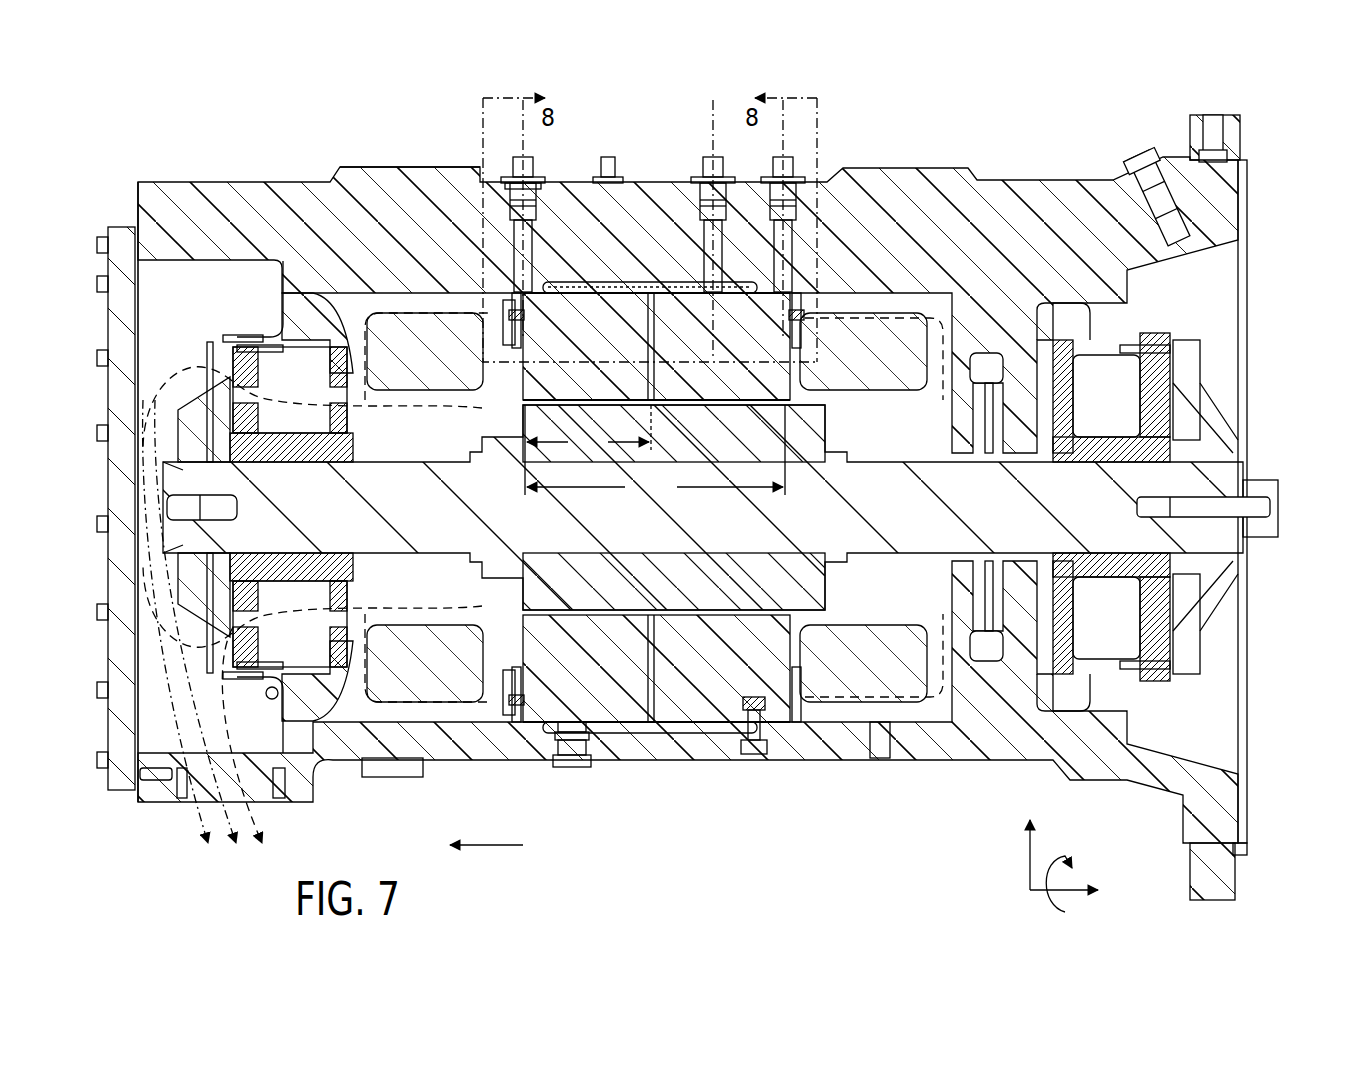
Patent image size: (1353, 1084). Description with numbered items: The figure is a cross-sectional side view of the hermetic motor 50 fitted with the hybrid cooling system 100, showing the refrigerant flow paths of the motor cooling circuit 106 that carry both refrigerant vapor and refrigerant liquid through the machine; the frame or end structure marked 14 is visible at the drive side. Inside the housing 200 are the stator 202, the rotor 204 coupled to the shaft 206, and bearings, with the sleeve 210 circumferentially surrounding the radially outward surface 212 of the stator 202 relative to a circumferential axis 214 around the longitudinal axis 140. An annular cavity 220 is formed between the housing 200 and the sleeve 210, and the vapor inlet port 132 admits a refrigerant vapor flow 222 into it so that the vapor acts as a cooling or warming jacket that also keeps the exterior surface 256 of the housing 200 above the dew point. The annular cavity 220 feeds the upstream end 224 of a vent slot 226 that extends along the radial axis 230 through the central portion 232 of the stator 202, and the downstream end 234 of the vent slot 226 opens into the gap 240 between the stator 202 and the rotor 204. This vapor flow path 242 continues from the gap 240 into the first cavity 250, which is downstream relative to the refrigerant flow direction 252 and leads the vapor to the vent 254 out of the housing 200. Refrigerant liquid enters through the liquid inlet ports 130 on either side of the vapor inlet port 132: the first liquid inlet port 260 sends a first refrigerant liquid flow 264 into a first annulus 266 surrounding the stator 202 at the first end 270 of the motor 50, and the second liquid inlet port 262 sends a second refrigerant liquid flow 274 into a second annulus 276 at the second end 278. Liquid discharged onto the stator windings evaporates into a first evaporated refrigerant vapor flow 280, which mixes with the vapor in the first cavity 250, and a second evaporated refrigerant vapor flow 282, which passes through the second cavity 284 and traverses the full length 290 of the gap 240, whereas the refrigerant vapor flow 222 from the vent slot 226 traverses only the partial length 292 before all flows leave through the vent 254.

The end plate / frame 14 is at (1108, 114).
The motor 50 is at (1016, 148).
The hybrid cooling system 100 is at (906, 116).
The motor cooling circuit 106 is at (462, 113).
The liquid inlet ports 130 is at (608, 170).
The vapor inlet port 132 is at (700, 180).
The longitudinal axis 140 is at (1074, 893).
The housing 200 is at (232, 206).
The stator 202 is at (860, 656).
The rotor 204 is at (805, 572).
The shaft 206 is at (1180, 476).
The sleeve 210 is at (584, 289).
The radially outward surface 212 is at (708, 728).
The circumferential axis 214 is at (1048, 894).
The annular cavity 220 is at (637, 289).
The refrigerant vapor flow 222 is at (712, 115).
The upstream end 224 is at (664, 308).
The vent slot 226 is at (658, 348).
The radial axis 230 is at (1028, 858).
The central portion 232 is at (645, 347).
The downstream end 234 is at (662, 392).
The gap 240 is at (552, 366).
The vapor flow path 242 is at (672, 282).
The first cavity 250 is at (337, 300).
The refrigerant flow direction 252 is at (523, 846).
The vent 254 is at (258, 805).
The exterior surface 256 is at (385, 180).
The first liquid inlet port 260 is at (536, 180).
The second liquid inlet port 262 is at (800, 180).
The first refrigerant liquid flow 264 is at (518, 150).
The first annulus 266 is at (508, 296).
The first end 270 is at (523, 768).
The second refrigerant liquid flow 274 is at (818, 125).
The second annulus 276 is at (800, 300).
The second end 278 is at (782, 830).
The first evaporated refrigerant vapor flow 280 is at (420, 315).
The second evaporated refrigerant vapor flow 282 is at (940, 323).
The second cavity 284 is at (1046, 320).
The full length 290 is at (655, 453).
The partial length 292 is at (589, 431).